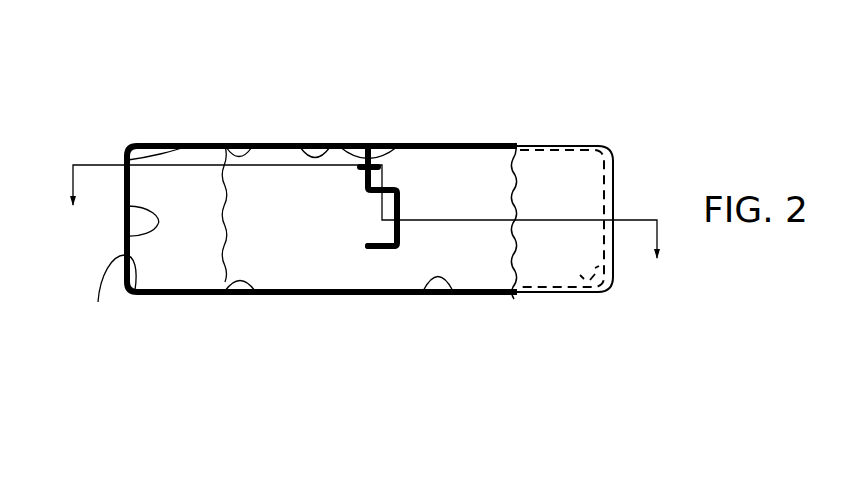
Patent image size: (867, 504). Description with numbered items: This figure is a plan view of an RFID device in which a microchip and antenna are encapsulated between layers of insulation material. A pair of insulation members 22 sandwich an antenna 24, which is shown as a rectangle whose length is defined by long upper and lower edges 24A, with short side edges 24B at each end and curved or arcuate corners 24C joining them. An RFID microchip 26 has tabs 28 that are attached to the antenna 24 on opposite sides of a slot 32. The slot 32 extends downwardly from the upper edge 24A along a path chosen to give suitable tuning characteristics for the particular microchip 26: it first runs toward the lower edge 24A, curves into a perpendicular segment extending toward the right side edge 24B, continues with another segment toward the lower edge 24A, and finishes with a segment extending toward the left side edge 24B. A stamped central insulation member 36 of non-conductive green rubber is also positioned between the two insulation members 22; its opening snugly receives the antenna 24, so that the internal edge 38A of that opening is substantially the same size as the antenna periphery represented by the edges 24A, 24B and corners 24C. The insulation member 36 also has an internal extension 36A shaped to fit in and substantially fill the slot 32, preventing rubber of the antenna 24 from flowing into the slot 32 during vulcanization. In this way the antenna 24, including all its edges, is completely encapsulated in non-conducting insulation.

The insulation member 22 is at (193, 206).
The antenna 24 is at (301, 206).
The upper and lower edges 24A is at (239, 146).
The side edges 24B is at (150, 228).
The arcuate corners 24C is at (187, 146).
The RFID microchip 26 is at (372, 166).
The tabs 28 is at (341, 146).
The slot 32 is at (400, 246).
The central insulation member 36 is at (343, 293).
The internal extension 36A is at (400, 195).
The internal edge 38A is at (318, 146).